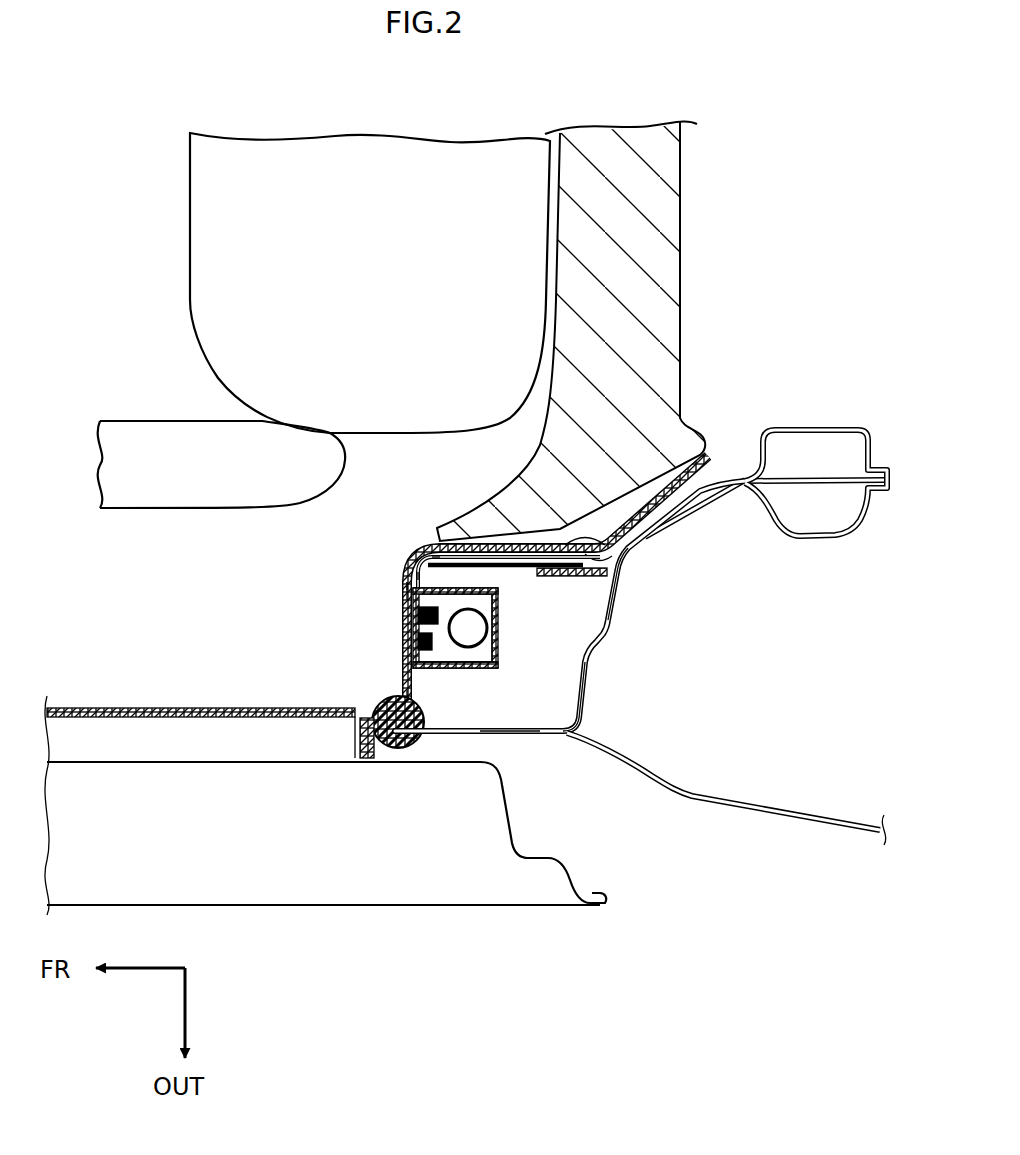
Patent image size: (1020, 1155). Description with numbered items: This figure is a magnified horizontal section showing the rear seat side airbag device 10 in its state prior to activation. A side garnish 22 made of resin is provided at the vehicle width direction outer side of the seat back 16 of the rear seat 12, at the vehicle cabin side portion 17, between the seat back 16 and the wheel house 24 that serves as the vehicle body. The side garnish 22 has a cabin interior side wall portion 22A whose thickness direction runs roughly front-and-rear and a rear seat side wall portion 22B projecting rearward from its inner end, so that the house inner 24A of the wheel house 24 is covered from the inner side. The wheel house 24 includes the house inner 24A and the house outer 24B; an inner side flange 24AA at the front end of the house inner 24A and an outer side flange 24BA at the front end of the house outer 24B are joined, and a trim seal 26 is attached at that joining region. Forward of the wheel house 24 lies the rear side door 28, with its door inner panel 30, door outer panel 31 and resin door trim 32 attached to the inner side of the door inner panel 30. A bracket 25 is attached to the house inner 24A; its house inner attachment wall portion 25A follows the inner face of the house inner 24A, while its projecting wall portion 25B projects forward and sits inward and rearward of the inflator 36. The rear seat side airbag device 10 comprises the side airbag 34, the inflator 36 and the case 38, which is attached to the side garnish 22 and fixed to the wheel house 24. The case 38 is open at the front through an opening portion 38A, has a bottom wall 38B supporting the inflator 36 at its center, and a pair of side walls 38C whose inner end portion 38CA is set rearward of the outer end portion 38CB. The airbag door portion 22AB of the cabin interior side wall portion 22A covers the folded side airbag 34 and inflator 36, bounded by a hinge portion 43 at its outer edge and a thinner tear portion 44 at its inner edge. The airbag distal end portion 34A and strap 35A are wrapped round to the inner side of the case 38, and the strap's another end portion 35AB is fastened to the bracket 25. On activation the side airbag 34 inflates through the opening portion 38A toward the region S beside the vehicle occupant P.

The rear seat side airbag device 10 is at (362, 613).
The rear seat 12 is at (708, 213).
The seat back 16 is at (677, 320).
The vehicle cabin side portion 17 is at (112, 588).
The side garnish 22 is at (406, 562).
The cabin interior side wall portion 22A is at (381, 703).
The airbag door portion 22AB is at (402, 585).
The rear seat side wall portion 22B is at (642, 550).
The wheel house 24 is at (569, 750).
The house inner 24A is at (597, 660).
The inner side flange 24AA is at (578, 726).
The house outer 24B is at (675, 796).
The outer side flange 24BA is at (513, 736).
The bracket 25 is at (606, 582).
The house inner attachment wall portion 25A is at (648, 530).
The projecting wall portion 25B is at (606, 605).
The trim seal 26 is at (358, 733).
The rear side door 28 is at (345, 910).
The door inner panel 30 is at (516, 843).
The door outer panel 31 is at (458, 908).
The door trim 32 is at (165, 707).
The side airbag 34 is at (416, 628).
The airbag distal end portion 34A is at (425, 560).
The strap 35A is at (611, 628).
The another end portion 35AB is at (612, 573).
The inflator 36 is at (485, 614).
The case 38 is at (506, 673).
The opening portion 38A is at (420, 645).
The bottom wall 38B is at (499, 640).
The side walls 38C is at (457, 588).
The end portion 38CA is at (408, 558).
The end portion 38CB is at (448, 700).
The hinge portion 43 is at (433, 672).
The tear portion 44 is at (420, 566).
The vehicle occupant P is at (196, 240).
The region S is at (328, 492).